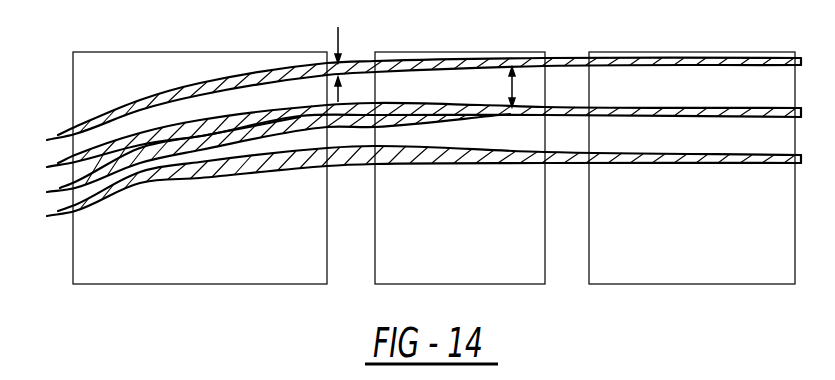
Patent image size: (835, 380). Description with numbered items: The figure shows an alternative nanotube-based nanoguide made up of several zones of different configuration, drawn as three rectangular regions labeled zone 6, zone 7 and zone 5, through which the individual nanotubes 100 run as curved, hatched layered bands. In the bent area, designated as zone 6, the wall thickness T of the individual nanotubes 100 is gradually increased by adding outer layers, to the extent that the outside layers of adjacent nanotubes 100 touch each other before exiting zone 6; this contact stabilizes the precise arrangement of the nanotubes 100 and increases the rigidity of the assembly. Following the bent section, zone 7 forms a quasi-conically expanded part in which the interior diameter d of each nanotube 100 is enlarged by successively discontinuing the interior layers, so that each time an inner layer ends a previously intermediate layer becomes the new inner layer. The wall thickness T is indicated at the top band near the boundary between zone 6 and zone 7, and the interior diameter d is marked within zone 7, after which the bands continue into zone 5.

The nanotubes 100 is at (63, 133).
The wall thickness T is at (345, 57).
The interior diameter d is at (520, 87).
The zone 6 is at (200, 168).
The zone 7 is at (460, 168).
The zone 5 is at (692, 168).